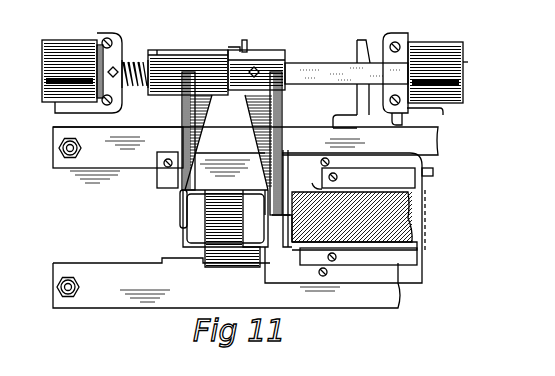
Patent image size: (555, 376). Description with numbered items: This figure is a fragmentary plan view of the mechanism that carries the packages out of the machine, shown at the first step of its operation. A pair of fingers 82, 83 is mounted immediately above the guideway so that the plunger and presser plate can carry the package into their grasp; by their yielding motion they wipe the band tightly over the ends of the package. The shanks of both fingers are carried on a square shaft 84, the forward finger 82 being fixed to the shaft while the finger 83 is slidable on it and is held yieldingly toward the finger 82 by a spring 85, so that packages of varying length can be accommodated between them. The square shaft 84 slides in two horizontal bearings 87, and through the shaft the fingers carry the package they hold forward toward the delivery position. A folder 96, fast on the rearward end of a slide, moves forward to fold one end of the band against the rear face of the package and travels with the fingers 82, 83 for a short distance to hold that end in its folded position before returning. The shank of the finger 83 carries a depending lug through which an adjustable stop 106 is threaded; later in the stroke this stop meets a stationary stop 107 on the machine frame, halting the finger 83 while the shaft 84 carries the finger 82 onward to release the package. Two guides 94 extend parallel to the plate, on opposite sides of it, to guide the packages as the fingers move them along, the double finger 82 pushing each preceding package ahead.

The horizontal bearings 87 is at (73, 52).
The spring 85 is at (135, 58).
The adjustable stop 106 is at (243, 42).
The square shaft 84 is at (309, 67).
The stationary stop 107 is at (362, 43).
The finger 83 is at (182, 213).
The folder 96 is at (213, 224).
The finger 82 is at (290, 193).
The guides 94 is at (378, 232).